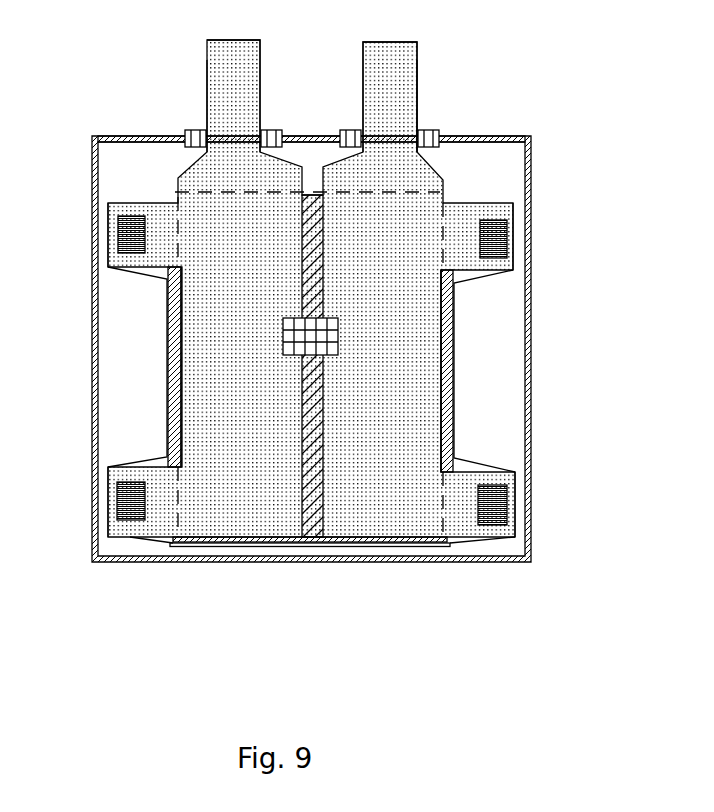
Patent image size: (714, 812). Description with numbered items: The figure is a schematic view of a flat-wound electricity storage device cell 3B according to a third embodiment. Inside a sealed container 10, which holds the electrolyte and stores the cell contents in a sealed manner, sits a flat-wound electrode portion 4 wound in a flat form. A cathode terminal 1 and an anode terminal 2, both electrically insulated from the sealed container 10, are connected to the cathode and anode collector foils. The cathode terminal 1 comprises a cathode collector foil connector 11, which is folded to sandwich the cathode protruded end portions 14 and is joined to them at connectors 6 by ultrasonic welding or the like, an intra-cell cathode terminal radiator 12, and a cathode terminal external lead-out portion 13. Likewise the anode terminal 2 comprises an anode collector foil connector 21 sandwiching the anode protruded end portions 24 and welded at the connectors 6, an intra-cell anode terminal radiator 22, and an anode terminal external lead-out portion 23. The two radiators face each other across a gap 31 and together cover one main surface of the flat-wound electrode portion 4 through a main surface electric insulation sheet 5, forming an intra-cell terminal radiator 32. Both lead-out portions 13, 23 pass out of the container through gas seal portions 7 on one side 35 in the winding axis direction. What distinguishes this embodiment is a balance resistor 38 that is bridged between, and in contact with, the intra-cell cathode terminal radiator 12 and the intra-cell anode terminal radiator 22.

The flat-wound electricity storage device cell 3B is at (505, 74).
The cathode terminal 1 is at (411, 93).
The anode terminal 2 is at (213, 92).
The flat-wound electrode portion 4 is at (448, 354).
The main surface electric insulation sheet 5 is at (373, 547).
The connector 6 is at (120, 234).
The gas seal portion 7 is at (197, 131).
The sealed container 10 is at (316, 134).
The cathode collector foil connector 11 is at (505, 206).
The intra-cell cathode terminal radiator 12 is at (420, 298).
The cathode terminal external lead-out portion 13 is at (396, 55).
The cathode protruded end portion 14 is at (468, 199).
The anode collector foil connector 21 is at (110, 213).
The intra-cell anode terminal radiator 22 is at (200, 304).
The anode terminal external lead-out portion 23 is at (228, 48).
The anode protruded end portion 24 is at (163, 196).
The gap 31 is at (298, 380).
The intra-cell terminal radiator 32 is at (212, 192).
The one side 35 is at (502, 140).
The balance resistor 38 is at (293, 339).